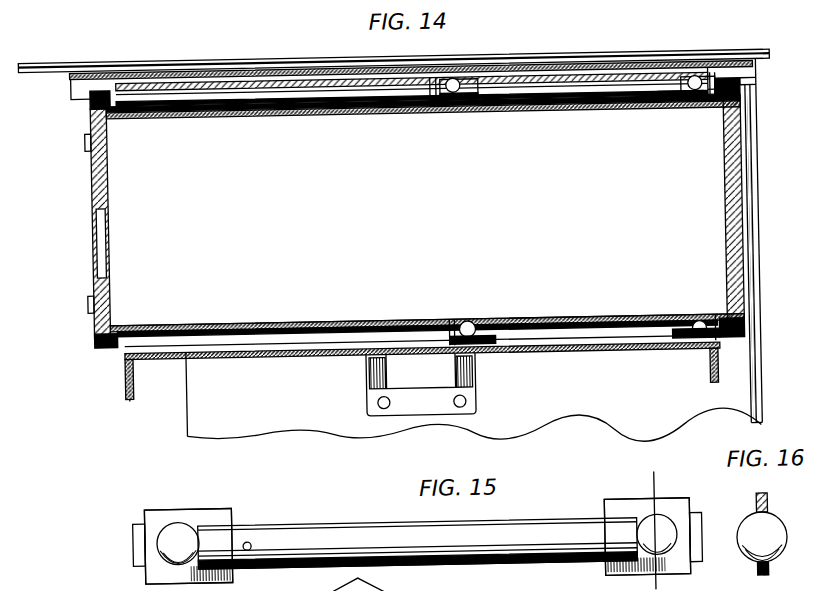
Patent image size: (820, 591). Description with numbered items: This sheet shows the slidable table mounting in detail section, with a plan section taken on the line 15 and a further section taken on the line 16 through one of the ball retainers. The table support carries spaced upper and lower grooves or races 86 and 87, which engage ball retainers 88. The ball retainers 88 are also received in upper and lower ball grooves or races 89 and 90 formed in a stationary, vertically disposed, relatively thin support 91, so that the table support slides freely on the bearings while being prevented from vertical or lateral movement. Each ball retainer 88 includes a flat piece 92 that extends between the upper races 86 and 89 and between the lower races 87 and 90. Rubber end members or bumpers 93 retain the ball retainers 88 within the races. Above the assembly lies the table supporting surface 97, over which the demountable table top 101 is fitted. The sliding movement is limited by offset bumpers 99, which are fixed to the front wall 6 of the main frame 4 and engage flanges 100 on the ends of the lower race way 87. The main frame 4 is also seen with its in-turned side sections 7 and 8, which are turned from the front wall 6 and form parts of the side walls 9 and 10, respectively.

In FIG. 14, the main frame 4 is at (760, 415).
In FIG. 14, the front wall 6 is at (524, 428).
In FIG. 14, the in-turned side section 7 is at (759, 364).
In FIG. 14, the in-turned side section 8 is at (184, 393).
In FIG. 14, the side wall 9 is at (759, 391).
In FIG. 14, the left side wall 10 is at (183, 372).
In FIG. 14, the section line 15— 15 is at (432, 84).
In FIG. 15, the section line 16— 16 is at (672, 490).
In FIG. 14, the upper groove or race 86 is at (201, 78).
In FIG. 14, the lower groove or race 87 is at (240, 354).
In FIG. 14, the ball retainer 88 is at (577, 101).
In FIG. 15, the ball retainer 88 is at (181, 528).
In FIG. 16, the ball retainer 88 is at (784, 525).
In FIG. 14, the upper ball groove or race 89 is at (237, 108).
In FIG. 14, the lower ball groove or race 90 is at (266, 320).
In FIG. 14, the stationary support 91 is at (745, 214).
In FIG. 14, the flat piece 92 is at (485, 104).
In FIG. 15, the flat piece 92 is at (232, 508).
In FIG. 16, the flat piece 92 is at (769, 497).
In FIG. 14, the rubber end member or bumper 93 is at (106, 86).
In FIG. 14, the table supporting surface 97 is at (656, 67).
In FIG. 14, the offset bumper 99 is at (455, 370).
In FIG. 14, the flange 100 is at (126, 394).
In FIG. 14, the demountable table top 101 is at (594, 51).